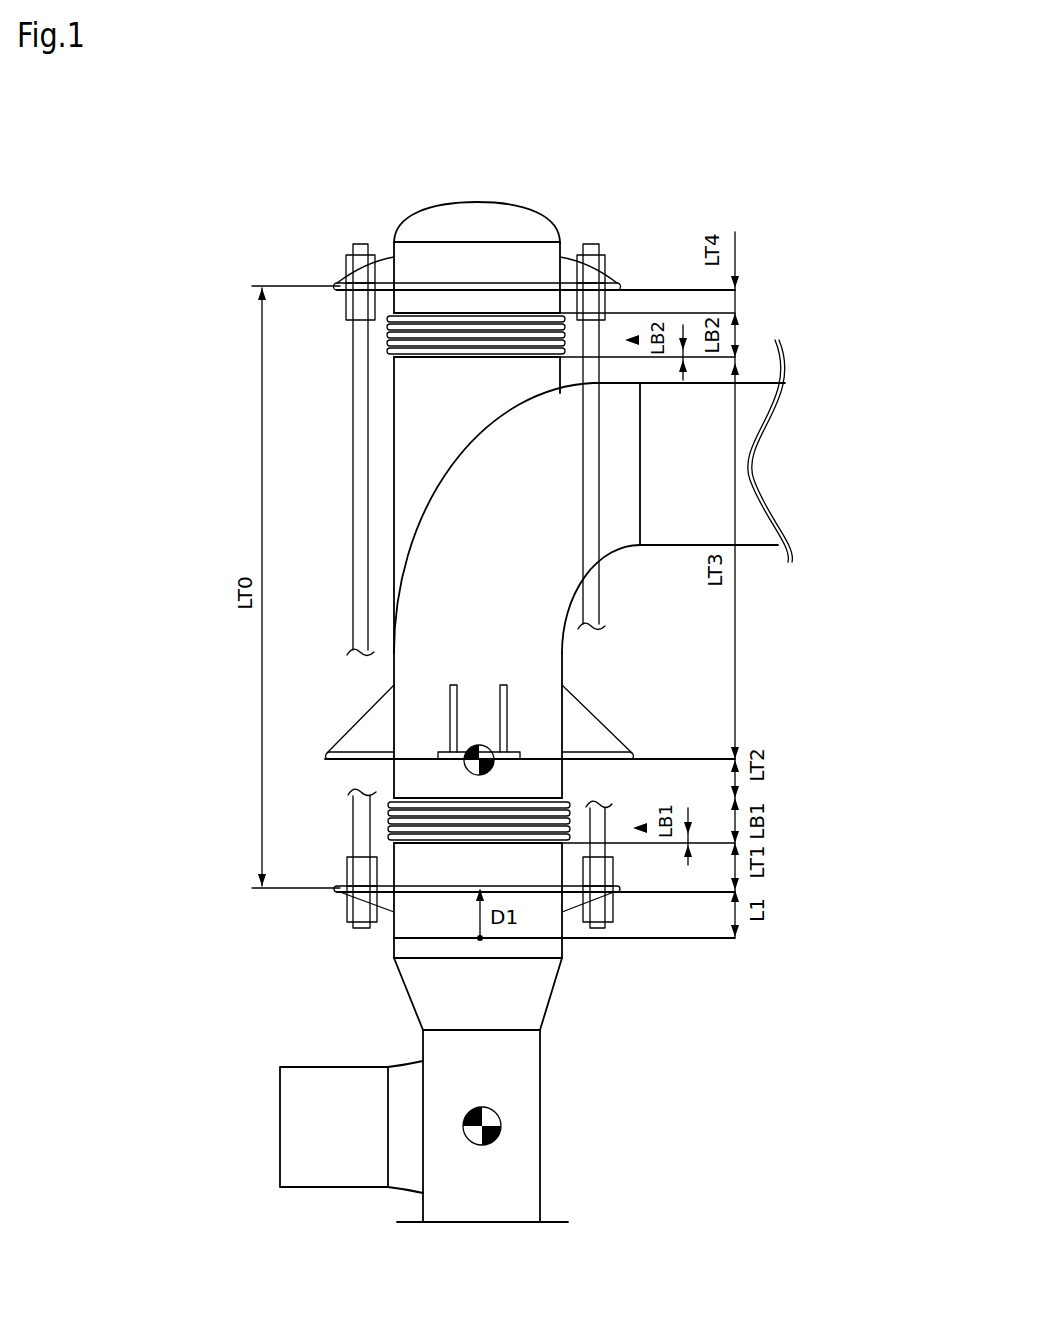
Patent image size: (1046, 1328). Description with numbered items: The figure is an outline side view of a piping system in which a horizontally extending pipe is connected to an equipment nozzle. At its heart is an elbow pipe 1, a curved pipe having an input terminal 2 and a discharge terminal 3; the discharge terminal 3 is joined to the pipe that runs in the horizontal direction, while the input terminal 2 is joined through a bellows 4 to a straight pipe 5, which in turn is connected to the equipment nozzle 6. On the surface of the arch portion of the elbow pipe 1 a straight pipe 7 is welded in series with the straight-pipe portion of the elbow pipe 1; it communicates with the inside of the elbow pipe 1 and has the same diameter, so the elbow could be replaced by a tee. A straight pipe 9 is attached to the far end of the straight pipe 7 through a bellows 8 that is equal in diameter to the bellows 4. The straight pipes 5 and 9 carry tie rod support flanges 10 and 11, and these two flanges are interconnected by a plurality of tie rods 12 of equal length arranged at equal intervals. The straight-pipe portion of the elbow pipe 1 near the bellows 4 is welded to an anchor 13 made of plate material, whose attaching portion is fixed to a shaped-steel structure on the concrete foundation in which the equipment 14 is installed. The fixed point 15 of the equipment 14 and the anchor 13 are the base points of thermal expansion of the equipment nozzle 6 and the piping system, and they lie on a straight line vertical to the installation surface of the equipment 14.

The elbow pipe 1 is at (438, 540).
The input terminal 2 is at (402, 795).
The discharge terminal 3 is at (640, 518).
The bellows 4 is at (390, 826).
The straight pipe 5 is at (443, 915).
The equipment nozzle 6 is at (508, 947).
The straight pipe 7 is at (410, 418).
The bellows 8 is at (385, 342).
The straight pipe 9 is at (506, 258).
The tie rod support flange 10 is at (340, 890).
The tie rod support flange 11 is at (340, 286).
The tie rods 12 is at (580, 607).
The anchor 13 is at (465, 755).
The equipment 14 is at (513, 1177).
The fixed point 15 is at (501, 1126).